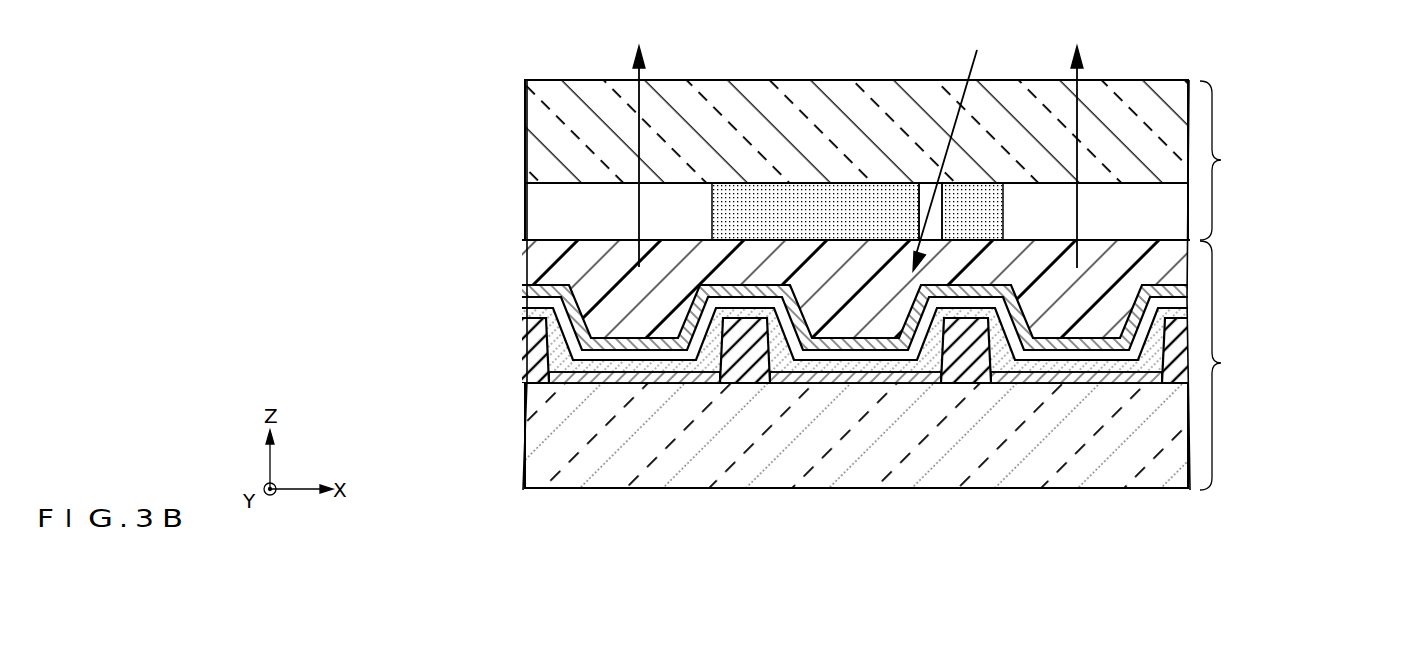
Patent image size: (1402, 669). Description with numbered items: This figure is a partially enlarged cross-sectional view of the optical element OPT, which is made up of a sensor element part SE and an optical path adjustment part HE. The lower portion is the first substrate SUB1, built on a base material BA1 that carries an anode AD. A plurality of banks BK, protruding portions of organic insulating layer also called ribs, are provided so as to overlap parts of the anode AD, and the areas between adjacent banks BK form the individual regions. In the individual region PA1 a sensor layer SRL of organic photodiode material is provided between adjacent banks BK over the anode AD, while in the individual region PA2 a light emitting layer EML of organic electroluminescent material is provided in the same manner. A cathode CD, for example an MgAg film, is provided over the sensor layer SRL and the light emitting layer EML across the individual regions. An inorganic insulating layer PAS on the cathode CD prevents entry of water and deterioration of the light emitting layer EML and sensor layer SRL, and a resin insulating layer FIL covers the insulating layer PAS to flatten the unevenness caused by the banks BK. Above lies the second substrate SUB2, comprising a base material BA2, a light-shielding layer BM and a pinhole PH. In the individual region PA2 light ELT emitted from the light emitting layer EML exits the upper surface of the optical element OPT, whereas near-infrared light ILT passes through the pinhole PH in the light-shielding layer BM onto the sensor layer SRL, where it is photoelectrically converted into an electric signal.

The base material BA2 is at (580, 88).
The light ELT is at (641, 74).
The light-shielding layer BM is at (798, 198).
The pinhole PH is at (929, 197).
The light ILT is at (998, 144).
The optical path adjustment part HE is at (1258, 100).
The second substrate SUB2 is at (881, 184).
The optical element OPT is at (444, 196).
The insulating layer FIL is at (553, 247).
The cathode CD is at (1138, 300).
The insulating layer PAS is at (1153, 292).
The sensor element part SE is at (1258, 299).
The anode AD is at (860, 378).
The bank BK is at (533, 357).
The first substrate SUB1 is at (870, 367).
The individual region PA1 is at (942, 390).
The individual region PA2 is at (1163, 390).
The base material BA1 is at (557, 482).
The sensor layer SRL is at (770, 380).
The light emitting layer EML is at (1003, 352).